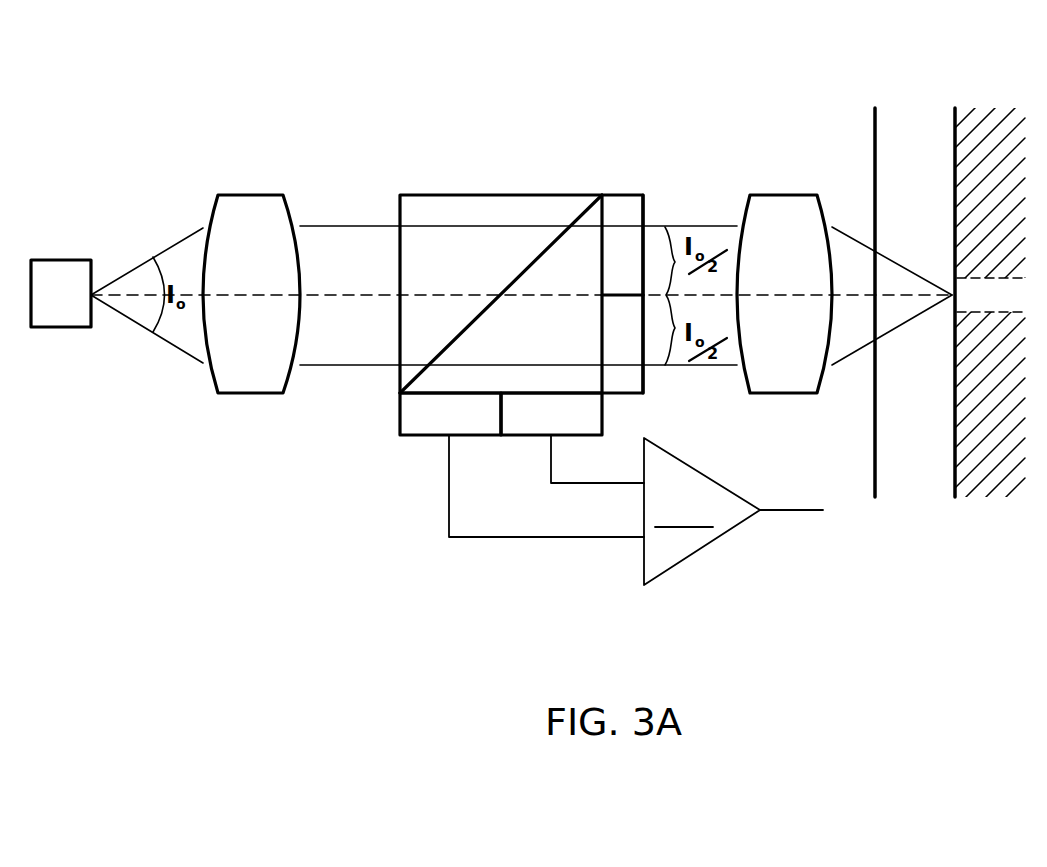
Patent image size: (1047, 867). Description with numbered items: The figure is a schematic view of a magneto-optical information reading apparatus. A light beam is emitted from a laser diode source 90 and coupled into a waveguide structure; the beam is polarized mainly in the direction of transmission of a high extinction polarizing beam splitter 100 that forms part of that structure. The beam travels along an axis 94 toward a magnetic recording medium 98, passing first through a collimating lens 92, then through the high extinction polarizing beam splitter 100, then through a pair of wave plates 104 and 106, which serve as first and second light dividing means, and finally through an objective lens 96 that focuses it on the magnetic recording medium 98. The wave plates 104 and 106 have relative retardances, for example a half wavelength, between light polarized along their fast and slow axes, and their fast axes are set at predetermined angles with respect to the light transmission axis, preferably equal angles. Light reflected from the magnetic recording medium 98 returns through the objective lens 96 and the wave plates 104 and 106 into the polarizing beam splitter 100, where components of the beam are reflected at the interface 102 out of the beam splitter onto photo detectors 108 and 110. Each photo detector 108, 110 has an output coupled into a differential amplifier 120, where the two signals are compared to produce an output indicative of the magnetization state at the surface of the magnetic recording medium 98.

The laser diode source 90 is at (47, 260).
The collimating lens 92 is at (237, 195).
The axis 94 is at (328, 293).
The objective lens 96 is at (777, 195).
The magnetic recording medium 98 is at (953, 160).
The high extinction polarizing beam splitter 100 is at (474, 195).
The interface 102 is at (530, 262).
The wave plate 104 is at (627, 195).
The wave plate 106 is at (633, 388).
The photo detector 108 is at (437, 412).
The photo detector 110 is at (555, 413).
The differential amplifier 120 is at (636, 510).